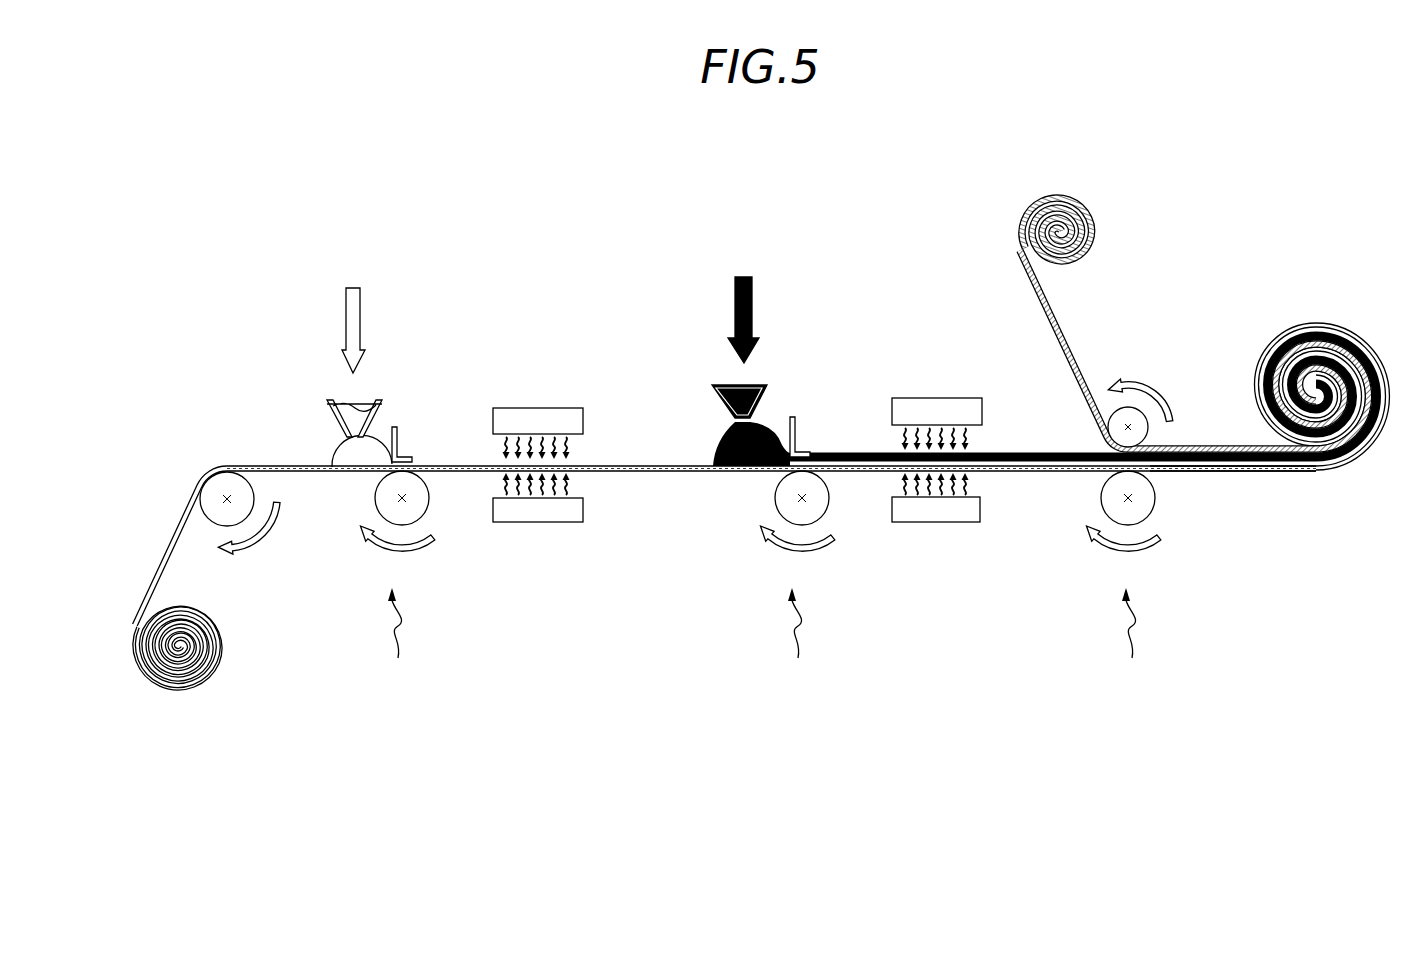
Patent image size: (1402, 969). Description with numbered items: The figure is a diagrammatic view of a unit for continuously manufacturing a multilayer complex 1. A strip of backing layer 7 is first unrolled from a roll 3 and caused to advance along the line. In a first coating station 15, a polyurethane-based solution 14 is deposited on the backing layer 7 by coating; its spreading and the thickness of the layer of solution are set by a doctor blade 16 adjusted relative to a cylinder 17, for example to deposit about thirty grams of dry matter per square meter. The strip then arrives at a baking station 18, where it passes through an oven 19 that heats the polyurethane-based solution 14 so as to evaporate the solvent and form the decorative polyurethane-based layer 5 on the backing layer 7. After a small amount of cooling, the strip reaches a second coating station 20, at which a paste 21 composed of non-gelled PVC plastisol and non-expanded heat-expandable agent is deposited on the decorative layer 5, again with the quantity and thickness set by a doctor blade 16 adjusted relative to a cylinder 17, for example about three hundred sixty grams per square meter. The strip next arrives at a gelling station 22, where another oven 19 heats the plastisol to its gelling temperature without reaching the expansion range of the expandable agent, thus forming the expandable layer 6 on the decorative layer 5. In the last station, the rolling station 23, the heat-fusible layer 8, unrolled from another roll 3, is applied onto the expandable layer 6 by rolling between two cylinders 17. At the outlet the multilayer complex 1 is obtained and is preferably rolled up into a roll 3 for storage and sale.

The multilayer complex 1 is at (1297, 507).
The roll 3 is at (198, 680).
The decorative polyurethane-based layer 5 is at (632, 465).
The expandable layer 6 is at (1022, 455).
The backing layer 7 is at (177, 540).
The heat-fusible layer 8 is at (1070, 345).
The polyurethane-based solution 14 is at (347, 412).
The first coating station 15 is at (393, 643).
The doctor blade 16 is at (397, 440).
The cylinder 17 is at (378, 497).
The baking station 18 is at (534, 600).
The oven 19 is at (541, 418).
The second coating station 20 is at (793, 643).
The paste 21 is at (737, 397).
The gelling station 22 is at (934, 600).
The rolling station 23 is at (1130, 643).